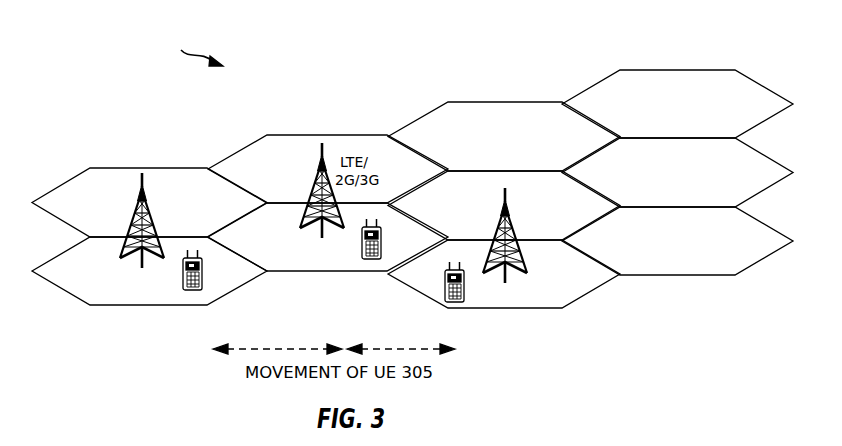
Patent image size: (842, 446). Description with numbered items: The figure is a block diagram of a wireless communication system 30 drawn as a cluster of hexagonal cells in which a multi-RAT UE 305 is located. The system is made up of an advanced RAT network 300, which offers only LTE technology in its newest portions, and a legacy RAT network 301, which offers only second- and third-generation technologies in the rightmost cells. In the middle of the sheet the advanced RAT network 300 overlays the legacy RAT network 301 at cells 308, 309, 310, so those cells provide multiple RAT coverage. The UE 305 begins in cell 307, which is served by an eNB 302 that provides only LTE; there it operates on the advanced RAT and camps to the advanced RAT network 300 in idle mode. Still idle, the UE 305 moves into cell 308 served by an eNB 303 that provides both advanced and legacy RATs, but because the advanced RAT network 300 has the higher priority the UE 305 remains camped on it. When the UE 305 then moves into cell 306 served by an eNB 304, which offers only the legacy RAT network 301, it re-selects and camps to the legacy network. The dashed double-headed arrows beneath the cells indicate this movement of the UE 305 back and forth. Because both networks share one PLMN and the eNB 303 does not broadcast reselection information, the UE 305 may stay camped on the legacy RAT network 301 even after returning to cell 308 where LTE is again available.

The wireless communication system 30 is at (201, 46).
The advanced RAT network 300 is at (60, 185).
The legacy RAT network 301 is at (673, 70).
The eNB 302 is at (151, 176).
The eNB 303 is at (317, 143).
The eNB 304 is at (512, 198).
The UE 305 is at (192, 290).
The cell 306 is at (578, 278).
The cell 307 is at (116, 278).
The cell 308 is at (278, 246).
The cell 309 is at (448, 216).
The cell 310 is at (470, 142).